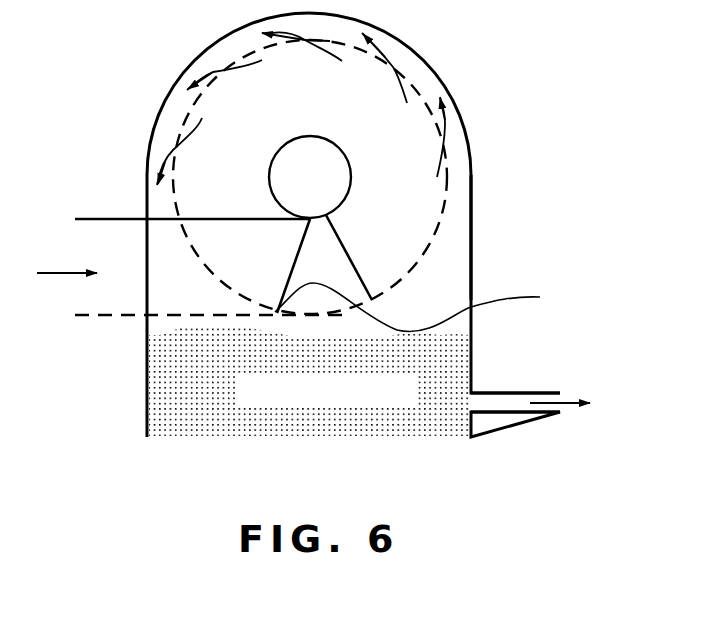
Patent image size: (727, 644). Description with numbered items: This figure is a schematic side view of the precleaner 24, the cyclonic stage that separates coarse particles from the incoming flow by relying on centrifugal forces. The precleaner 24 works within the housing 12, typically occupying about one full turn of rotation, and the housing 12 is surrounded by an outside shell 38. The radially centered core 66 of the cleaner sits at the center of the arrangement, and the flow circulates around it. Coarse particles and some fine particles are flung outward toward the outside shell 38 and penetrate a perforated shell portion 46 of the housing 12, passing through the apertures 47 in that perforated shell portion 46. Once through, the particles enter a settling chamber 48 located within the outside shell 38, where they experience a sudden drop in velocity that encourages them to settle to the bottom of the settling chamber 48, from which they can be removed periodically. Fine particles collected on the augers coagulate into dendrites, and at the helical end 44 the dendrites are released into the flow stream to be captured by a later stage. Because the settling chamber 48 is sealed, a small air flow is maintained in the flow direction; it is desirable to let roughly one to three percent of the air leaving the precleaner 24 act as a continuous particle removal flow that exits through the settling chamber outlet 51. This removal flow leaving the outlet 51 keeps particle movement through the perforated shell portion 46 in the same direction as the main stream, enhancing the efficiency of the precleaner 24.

The precleaner 24 is at (478, 104).
The housing 12 is at (440, 229).
The outside shell 38 is at (471, 198).
The helical end 44 is at (431, 307).
The perforated shell portion 46 is at (404, 68).
The apertures 47 is at (412, 98).
The settling chamber 48 is at (178, 383).
The settling chamber outlet 51 is at (515, 405).
The radially centered core 66 is at (273, 168).